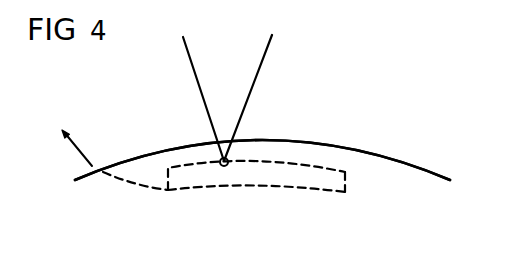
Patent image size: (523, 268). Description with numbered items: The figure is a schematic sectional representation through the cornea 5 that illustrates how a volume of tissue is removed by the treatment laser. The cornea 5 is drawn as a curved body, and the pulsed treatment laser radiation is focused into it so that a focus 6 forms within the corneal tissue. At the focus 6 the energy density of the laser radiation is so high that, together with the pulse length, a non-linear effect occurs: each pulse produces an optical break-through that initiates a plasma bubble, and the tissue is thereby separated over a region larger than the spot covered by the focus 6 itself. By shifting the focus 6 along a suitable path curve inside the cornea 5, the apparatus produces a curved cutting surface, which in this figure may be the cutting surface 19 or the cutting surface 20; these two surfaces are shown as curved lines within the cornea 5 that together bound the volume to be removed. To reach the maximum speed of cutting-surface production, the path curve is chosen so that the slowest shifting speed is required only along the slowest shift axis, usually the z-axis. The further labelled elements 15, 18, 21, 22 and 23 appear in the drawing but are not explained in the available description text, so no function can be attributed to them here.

The cornea 5 is at (132, 131).
The focus 6 is at (225, 166).
The front surface / cover 15 is at (373, 148).
The sensor housing 18 is at (347, 181).
The cutting surface 19 is at (294, 162).
The cutting surface 20 is at (253, 188).
The light beam 21 is at (262, 65).
The hidden surface portion 22 is at (104, 172).
The direction arrow 23 is at (83, 157).